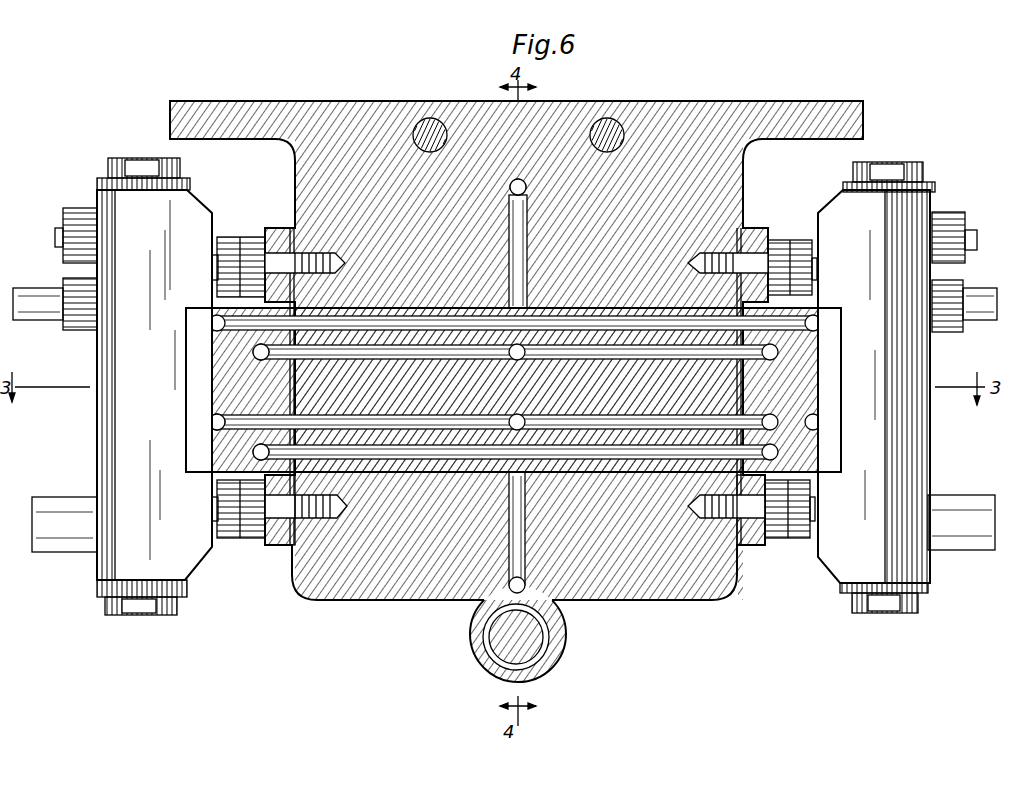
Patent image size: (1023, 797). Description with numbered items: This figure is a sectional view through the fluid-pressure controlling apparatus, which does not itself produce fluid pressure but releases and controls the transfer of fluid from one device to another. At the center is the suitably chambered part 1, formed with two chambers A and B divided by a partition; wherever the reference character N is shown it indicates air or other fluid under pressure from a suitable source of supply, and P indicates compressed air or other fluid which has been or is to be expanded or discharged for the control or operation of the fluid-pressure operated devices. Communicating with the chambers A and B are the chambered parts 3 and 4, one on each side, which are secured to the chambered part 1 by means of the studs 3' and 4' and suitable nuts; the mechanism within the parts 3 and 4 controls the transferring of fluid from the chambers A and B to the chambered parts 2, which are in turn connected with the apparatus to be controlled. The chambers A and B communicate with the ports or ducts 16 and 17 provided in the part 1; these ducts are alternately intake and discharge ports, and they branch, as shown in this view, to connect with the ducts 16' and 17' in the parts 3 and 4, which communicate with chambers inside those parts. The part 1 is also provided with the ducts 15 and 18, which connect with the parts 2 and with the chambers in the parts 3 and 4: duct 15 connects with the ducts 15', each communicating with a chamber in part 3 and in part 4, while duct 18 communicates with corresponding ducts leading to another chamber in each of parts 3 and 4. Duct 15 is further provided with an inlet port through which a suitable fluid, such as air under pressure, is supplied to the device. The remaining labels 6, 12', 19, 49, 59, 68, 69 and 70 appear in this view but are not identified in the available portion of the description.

The chambered part 1 is at (324, 601).
The chambered parts 2 is at (97, 462).
The chambered part 3 is at (499, 390).
The studs 3' is at (257, 387).
The chambered part 4 is at (884, 387).
The studs 4' is at (772, 389).
The top flange 6 is at (790, 104).
The passage 12' is at (294, 454).
The duct 15 is at (515, 256).
The ducts 15' is at (335, 453).
The port or duct 16 is at (515, 353).
The ducts 16' is at (294, 353).
The port or duct 17 is at (515, 423).
The ducts 17' is at (187, 425).
The duct 18 is at (515, 454).
The bottom boss 19 is at (550, 640).
The bolt boss 49 is at (276, 547).
The pipe fitting 59 is at (63, 240).
The pipe 68 is at (47, 306).
The upper nut 69 is at (133, 166).
The lower nut 70 is at (148, 612).
The fluid under pressure N is at (540, 187).
The chamber A is at (530, 354).
The chamber B is at (530, 424).
The expanded or discharged fluid P is at (530, 454).